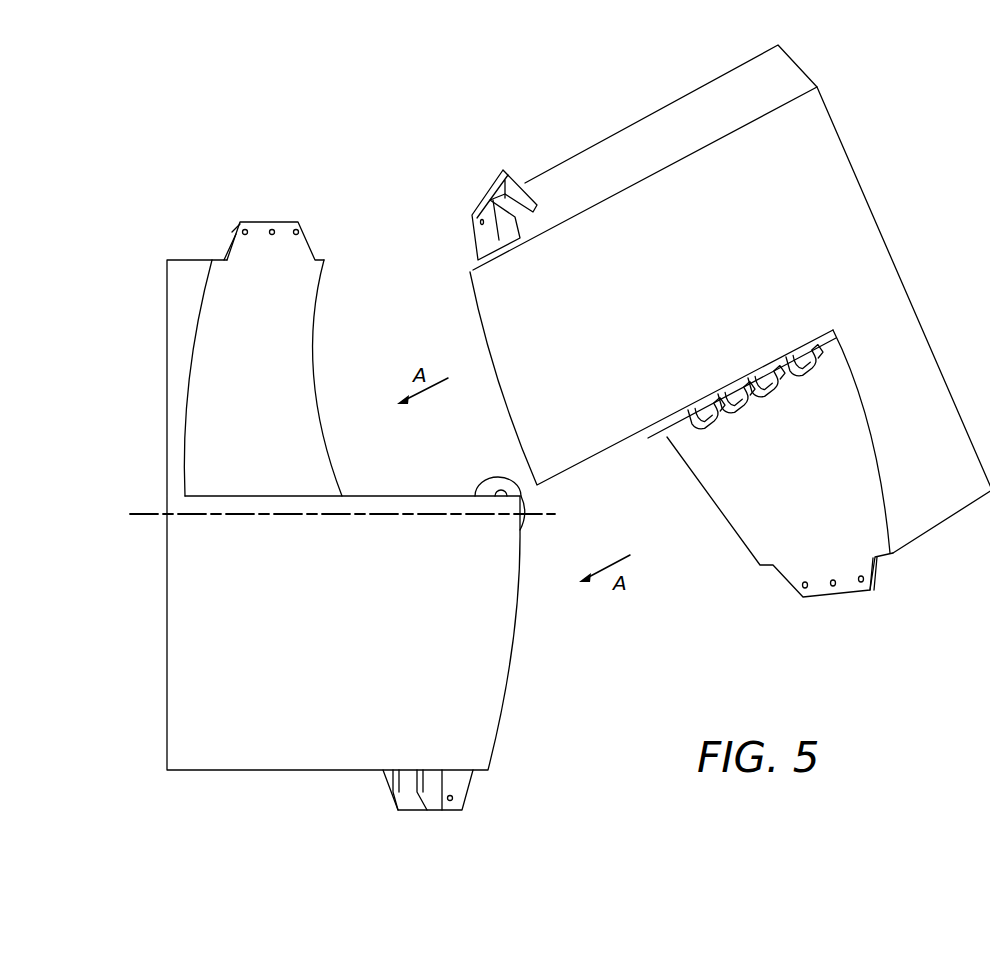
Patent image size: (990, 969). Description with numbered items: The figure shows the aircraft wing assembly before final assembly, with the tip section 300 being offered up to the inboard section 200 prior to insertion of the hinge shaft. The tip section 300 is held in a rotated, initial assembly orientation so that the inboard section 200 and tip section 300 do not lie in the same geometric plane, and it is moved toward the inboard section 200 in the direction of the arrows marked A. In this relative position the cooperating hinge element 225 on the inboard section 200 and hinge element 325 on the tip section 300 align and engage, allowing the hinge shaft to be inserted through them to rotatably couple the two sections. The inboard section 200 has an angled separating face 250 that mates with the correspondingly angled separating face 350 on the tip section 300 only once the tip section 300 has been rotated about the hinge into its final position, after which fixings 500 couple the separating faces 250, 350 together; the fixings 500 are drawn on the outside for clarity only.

The inboard section 200 is at (178, 655).
The hinge element 225 is at (497, 479).
The separating face 250 is at (302, 347).
The tip section 300 is at (852, 182).
The hinge element 325 is at (741, 405).
The separating face 350 is at (729, 518).
The fixings 500 is at (232, 238).